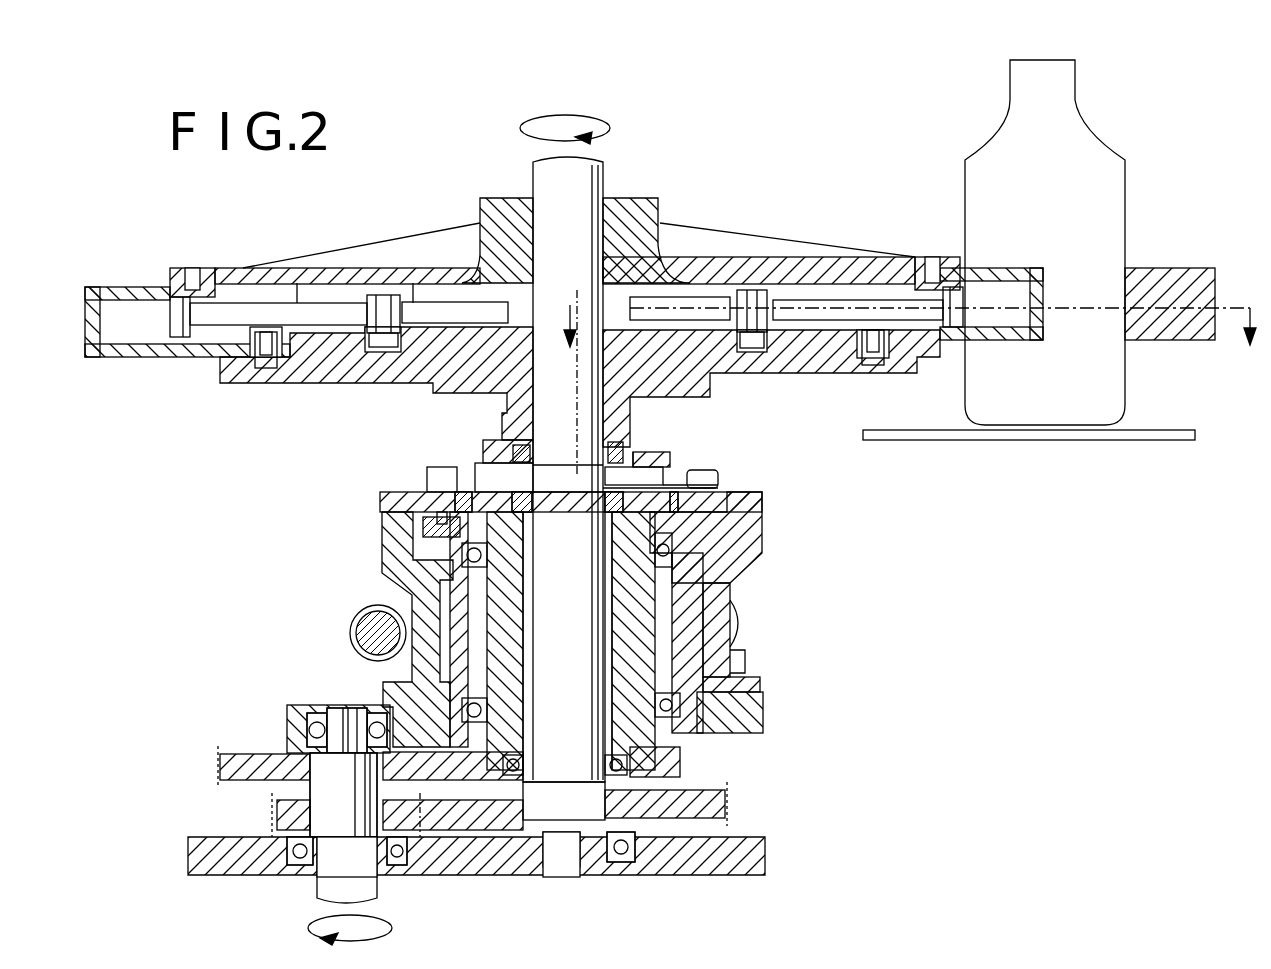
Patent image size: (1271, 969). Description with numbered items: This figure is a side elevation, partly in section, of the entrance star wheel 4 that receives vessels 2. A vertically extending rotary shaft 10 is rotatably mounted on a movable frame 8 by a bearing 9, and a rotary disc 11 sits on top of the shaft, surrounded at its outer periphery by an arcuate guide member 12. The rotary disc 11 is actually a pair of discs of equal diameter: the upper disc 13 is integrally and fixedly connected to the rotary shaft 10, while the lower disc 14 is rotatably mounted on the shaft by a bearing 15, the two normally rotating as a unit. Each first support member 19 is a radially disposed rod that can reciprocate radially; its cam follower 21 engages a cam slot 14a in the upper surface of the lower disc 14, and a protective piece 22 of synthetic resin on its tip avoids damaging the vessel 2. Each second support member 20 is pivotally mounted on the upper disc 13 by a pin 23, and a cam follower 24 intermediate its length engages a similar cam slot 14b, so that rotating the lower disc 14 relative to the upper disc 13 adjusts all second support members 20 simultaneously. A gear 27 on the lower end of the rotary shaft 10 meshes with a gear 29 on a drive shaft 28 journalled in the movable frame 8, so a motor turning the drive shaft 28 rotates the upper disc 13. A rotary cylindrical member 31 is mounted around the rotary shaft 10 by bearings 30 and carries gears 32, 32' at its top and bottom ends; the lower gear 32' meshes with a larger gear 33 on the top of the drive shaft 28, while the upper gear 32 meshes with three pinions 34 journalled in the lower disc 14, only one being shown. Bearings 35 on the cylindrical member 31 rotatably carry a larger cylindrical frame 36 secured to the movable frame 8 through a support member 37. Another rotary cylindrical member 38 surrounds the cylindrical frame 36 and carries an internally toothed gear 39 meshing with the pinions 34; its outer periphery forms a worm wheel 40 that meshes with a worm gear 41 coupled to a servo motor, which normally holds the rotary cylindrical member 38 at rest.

The vessel 2 is at (1112, 143).
The entrance star wheel 4 is at (818, 546).
The movable frame 8 is at (765, 850).
The bearing 9 is at (638, 847).
The rotary shaft 10 is at (560, 858).
The rotary disc 11 is at (737, 214).
The arcuate guide member 12 is at (1178, 268).
The upper disc 13 is at (765, 257).
The lower disc 14 is at (772, 335).
The cam slot 14a is at (365, 357).
The cam slot 14b is at (265, 372).
The bearing 15 is at (638, 450).
The first support member 19 is at (330, 300).
The second support member 20 is at (120, 357).
The cam follower 21 is at (385, 350).
The protective piece 22 is at (185, 297).
The pin 23 is at (213, 285).
The cam follower 24 is at (268, 368).
The gear 27 is at (728, 800).
The drive shaft 28 is at (378, 878).
The gear 29 is at (275, 814).
The bearings 30 is at (548, 508).
The rotary cylindrical member 31 is at (732, 657).
The gear 32 is at (603, 455).
The gear 32' is at (632, 759).
The gear 33 is at (218, 770).
The pinion 34 is at (418, 492).
The bearings 35 is at (656, 668).
The cylindrical frame 36 is at (718, 612).
The support member 37 is at (765, 708).
The rotary cylindrical member 38 is at (762, 530).
The internally toothed gear 39 is at (718, 478).
The worm wheel 40 is at (378, 606).
The worm gear 41 is at (355, 648).